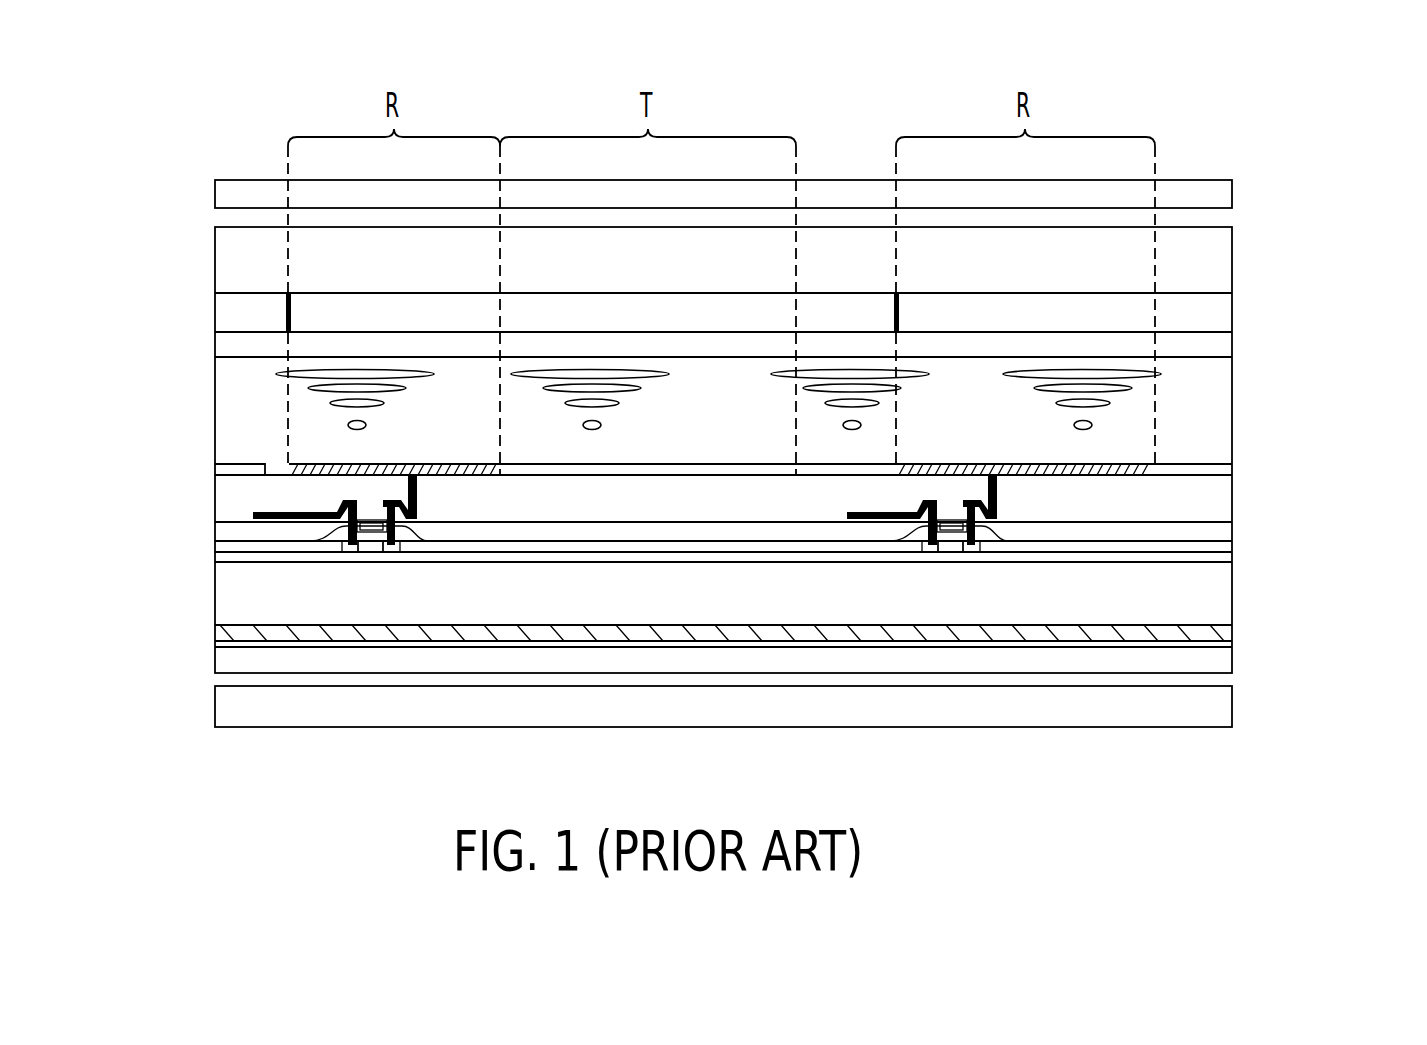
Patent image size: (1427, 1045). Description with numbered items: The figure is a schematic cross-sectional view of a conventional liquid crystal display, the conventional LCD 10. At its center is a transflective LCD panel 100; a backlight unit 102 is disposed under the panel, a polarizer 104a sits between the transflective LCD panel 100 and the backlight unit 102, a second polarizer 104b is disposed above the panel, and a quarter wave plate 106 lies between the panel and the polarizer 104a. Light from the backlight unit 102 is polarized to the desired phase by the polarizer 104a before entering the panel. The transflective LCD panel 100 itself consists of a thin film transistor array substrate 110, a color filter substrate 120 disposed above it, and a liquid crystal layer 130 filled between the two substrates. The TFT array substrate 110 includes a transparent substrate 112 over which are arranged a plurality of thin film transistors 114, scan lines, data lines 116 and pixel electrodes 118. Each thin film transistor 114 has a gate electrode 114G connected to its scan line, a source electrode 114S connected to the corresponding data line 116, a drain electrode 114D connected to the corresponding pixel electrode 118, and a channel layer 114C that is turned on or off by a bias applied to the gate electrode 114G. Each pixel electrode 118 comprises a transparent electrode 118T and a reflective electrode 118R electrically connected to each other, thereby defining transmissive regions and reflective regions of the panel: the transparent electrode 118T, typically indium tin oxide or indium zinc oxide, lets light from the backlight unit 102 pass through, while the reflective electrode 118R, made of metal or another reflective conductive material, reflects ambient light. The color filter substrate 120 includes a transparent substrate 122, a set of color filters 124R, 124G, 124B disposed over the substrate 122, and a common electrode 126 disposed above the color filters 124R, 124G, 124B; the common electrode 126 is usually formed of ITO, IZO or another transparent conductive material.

The conventional LCD 10 is at (1246, 812).
The transflective LCD panel 100 is at (1355, 285).
The backlight unit 102 is at (1218, 708).
The polarizer 104a is at (1218, 661).
The polarizer 104b is at (1218, 200).
The quarter wave plate 106 is at (1218, 633).
The thin film transistor array substrate 110 is at (1271, 466).
The transparent substrate 112 is at (271, 603).
The thin film transistor 114 is at (119, 552).
The source electrode 114S is at (345, 537).
The channel layer 114C is at (367, 548).
The gate electrode 114G is at (377, 556).
The drain electrode 114D is at (403, 550).
The data line 116 is at (292, 512).
The pixel electrode 118 is at (119, 390).
The transparent electrode 118T is at (578, 466).
The reflective electrode 118R is at (306, 464).
The color filter substrate 120 is at (1271, 229).
The transparent substrate 122 is at (271, 278).
The color filter 124R is at (723, 313).
The color filter 124G is at (557, 313).
The color filter 124B is at (982, 313).
The common electrode 126 is at (226, 347).
The liquid crystal layer 130 is at (1271, 359).